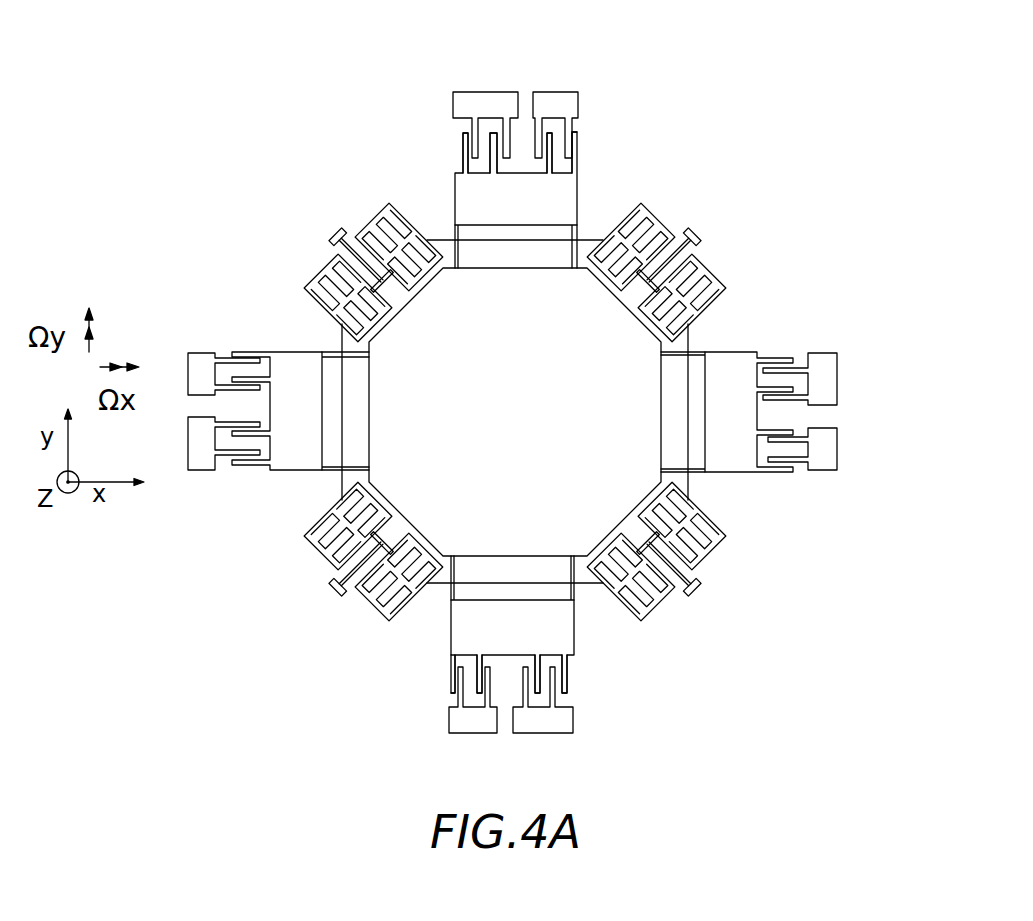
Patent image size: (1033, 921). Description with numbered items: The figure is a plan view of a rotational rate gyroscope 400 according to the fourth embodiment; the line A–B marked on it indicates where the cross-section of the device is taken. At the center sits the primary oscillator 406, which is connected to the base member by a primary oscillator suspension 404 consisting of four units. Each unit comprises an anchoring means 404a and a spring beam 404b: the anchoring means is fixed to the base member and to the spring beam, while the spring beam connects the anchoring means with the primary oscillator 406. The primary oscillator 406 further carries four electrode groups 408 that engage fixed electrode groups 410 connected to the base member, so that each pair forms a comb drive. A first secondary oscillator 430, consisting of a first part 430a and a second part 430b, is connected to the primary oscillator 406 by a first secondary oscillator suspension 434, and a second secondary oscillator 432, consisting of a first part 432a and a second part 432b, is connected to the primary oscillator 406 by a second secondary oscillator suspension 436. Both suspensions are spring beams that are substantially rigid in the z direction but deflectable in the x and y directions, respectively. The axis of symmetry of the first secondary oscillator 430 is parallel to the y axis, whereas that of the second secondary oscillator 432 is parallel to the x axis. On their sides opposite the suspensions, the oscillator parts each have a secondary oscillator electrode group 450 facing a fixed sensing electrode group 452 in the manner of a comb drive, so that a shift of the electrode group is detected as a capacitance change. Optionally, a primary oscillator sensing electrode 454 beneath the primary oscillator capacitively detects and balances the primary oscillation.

The rotational rate gyroscope 400 is at (270, 160).
The primary oscillator suspension 404 is at (693, 565).
The anchoring means 404a is at (687, 600).
The spring beam 404b is at (697, 572).
The primary oscillator 406 is at (620, 455).
The electrode group of the primary oscillator 408 is at (607, 592).
The fixed electrode group 410 is at (652, 228).
The first secondary oscillator 430 is at (540, 76).
The first part of the first secondary oscillator 430a is at (557, 190).
The second part of the first secondary oscillator 430b is at (490, 628).
The second secondary oscillator 432 is at (858, 397).
The first part of the second secondary oscillator 432a is at (288, 372).
The second part of the second secondary oscillator 432b is at (756, 356).
The first secondary oscillator suspension 434 is at (579, 231).
The second secondary oscillator suspension 436 is at (355, 437).
The secondary oscillator electrode group 450 is at (465, 152).
The fixed sensing electrode group 452 is at (470, 121).
The primary oscillator sensing electrode 454 is at (322, 457).
The section line end point A is at (337, 312).
The section line end point B is at (424, 242).